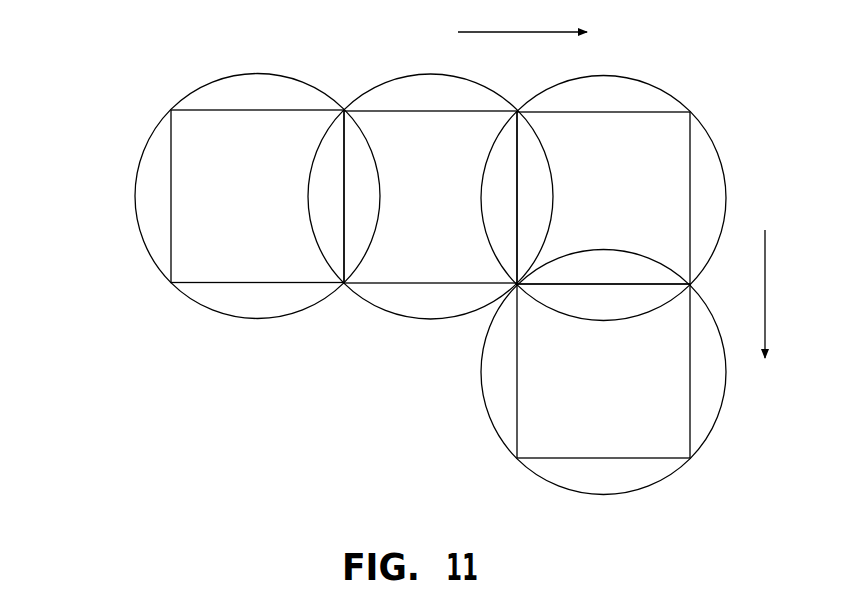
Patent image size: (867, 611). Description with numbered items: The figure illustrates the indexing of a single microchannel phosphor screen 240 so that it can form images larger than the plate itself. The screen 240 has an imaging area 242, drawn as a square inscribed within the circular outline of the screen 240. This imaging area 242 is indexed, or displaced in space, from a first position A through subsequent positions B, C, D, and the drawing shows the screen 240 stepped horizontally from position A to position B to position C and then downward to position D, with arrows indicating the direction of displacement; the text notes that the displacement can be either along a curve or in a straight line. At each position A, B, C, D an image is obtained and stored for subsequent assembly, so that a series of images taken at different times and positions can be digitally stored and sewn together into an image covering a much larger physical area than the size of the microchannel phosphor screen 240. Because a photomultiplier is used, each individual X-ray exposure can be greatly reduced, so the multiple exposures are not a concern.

The microchannel phosphor screen 240 is at (399, 255).
The imaging area 242 is at (170, 196).
The first position A is at (215, 182).
The second position B is at (430, 183).
The third position C is at (603, 184).
The fourth position D is at (614, 372).